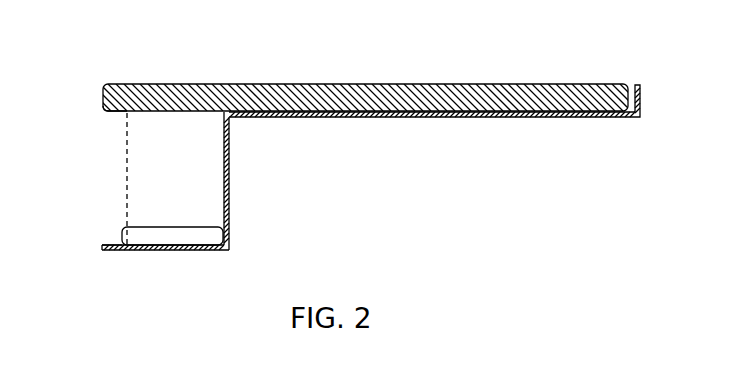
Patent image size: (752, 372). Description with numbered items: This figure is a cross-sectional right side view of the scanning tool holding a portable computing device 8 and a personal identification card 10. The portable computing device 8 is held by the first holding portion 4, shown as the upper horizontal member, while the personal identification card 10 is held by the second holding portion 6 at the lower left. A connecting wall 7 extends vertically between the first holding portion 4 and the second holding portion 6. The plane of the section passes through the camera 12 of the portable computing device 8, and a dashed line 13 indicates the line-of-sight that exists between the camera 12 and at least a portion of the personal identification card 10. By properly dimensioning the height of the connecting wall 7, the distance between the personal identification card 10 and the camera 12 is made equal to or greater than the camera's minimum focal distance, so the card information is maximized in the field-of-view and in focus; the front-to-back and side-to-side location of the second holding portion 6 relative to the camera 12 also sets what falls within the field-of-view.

The portable computing device 8 is at (270, 84).
The first holding portion 4 is at (387, 118).
The connecting wall 7 is at (229, 173).
The second holding portion 6 is at (170, 251).
The personal identification card 10 is at (110, 243).
The camera 12 is at (127, 113).
The line-of-sight 13 is at (126, 190).